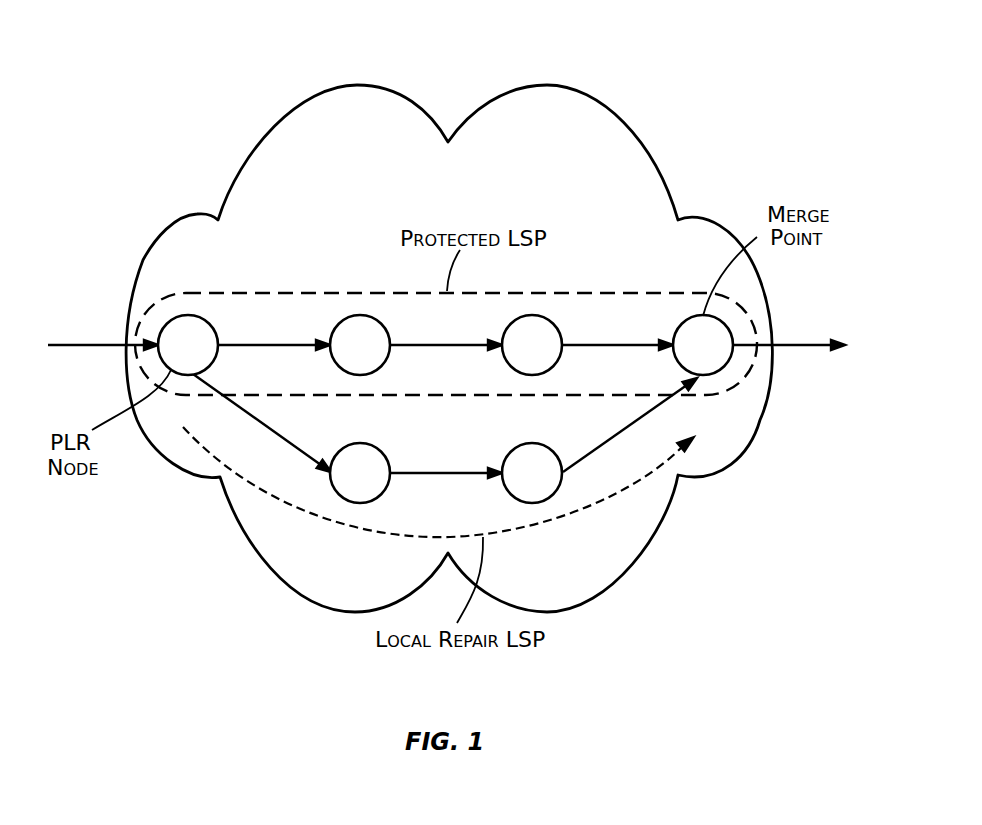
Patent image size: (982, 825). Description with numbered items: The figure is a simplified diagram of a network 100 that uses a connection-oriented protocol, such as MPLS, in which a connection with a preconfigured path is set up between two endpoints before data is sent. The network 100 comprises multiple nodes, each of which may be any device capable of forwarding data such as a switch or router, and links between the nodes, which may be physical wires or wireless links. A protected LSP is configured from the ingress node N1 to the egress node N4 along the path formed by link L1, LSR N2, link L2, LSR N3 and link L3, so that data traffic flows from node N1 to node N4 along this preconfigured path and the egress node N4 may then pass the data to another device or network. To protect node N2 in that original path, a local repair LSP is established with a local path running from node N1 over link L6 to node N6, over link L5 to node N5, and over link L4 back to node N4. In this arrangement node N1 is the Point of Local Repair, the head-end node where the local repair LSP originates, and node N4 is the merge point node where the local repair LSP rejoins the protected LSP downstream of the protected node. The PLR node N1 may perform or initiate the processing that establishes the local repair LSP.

The network 100 is at (545, 86).
The ingress node N1 is at (188, 345).
The LSR node N2 is at (360, 345).
The LSR node N3 is at (532, 345).
The egress node N4 is at (703, 345).
The node N5 is at (532, 473).
The node N6 is at (360, 473).
The link L1 is at (274, 334).
The link L2 is at (446, 334).
The link L3 is at (617, 334).
The link L4 is at (630, 425).
The link L5 is at (446, 486).
The link L6 is at (262, 423).